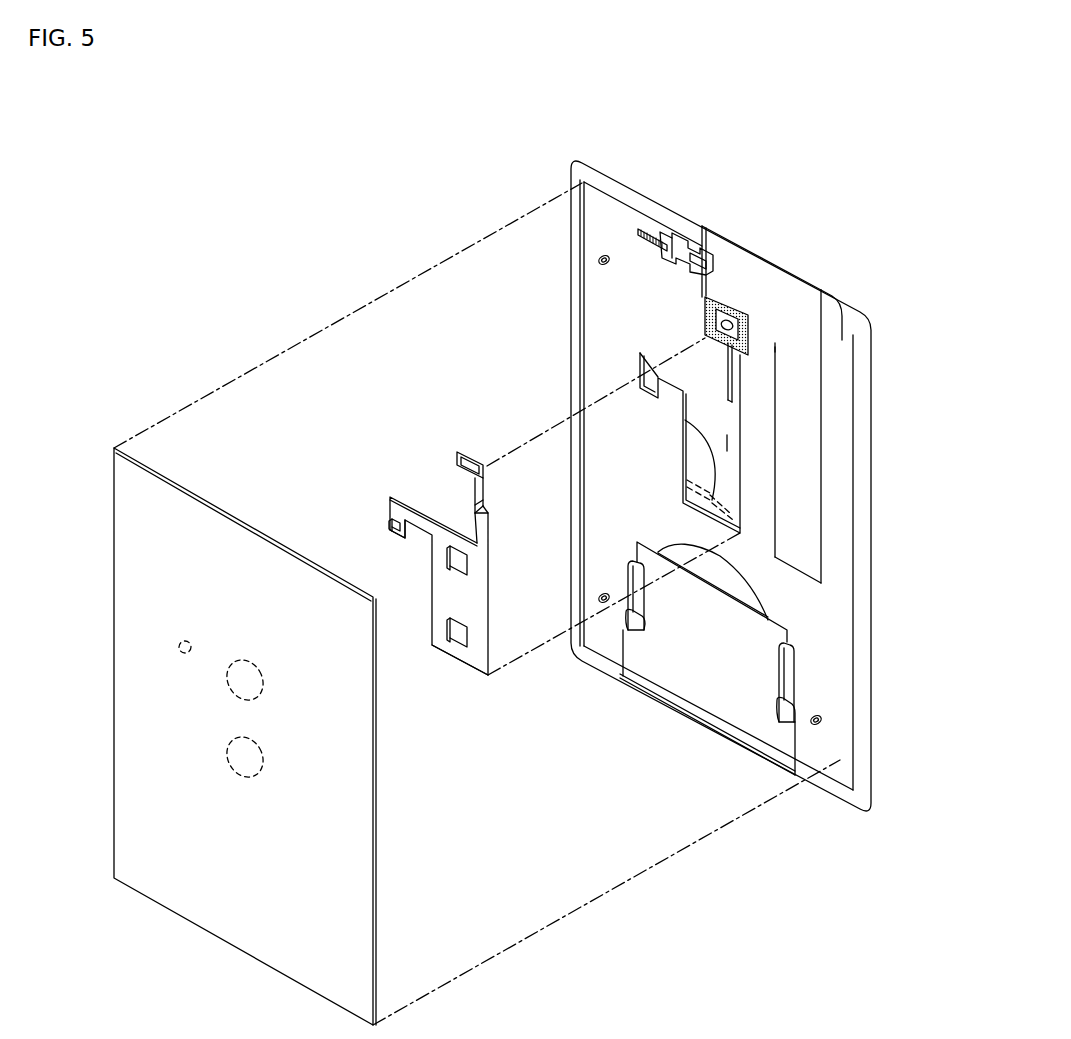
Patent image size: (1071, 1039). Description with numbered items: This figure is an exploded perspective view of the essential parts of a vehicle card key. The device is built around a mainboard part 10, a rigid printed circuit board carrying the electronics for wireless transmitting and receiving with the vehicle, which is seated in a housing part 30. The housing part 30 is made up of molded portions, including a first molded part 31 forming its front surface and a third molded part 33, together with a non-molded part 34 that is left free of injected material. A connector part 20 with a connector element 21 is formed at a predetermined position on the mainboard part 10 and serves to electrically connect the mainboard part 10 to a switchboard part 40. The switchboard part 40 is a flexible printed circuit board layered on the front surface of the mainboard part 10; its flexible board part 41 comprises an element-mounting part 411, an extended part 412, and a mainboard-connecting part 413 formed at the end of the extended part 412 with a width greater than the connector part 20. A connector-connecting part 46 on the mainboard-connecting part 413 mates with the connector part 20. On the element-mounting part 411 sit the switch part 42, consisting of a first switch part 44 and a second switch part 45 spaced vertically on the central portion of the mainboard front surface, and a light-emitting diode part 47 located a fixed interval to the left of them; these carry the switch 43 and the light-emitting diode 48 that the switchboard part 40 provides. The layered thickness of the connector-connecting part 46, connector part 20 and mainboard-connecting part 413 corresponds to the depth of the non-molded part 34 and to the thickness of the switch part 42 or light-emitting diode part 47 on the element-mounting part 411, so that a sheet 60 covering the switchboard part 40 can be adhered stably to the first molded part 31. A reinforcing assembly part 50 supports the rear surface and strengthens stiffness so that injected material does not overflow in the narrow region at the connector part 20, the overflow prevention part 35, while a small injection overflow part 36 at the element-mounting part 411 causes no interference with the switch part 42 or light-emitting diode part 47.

The mainboard part 10 is at (727, 473).
The connector part 20 is at (760, 318).
The connector element 21 is at (727, 317).
The housing part 30 is at (655, 172).
The first molded part 31 is at (617, 308).
The third molded part 33 is at (866, 634).
The non-molded part 34 is at (727, 443).
The overflow prevention part 35 is at (776, 347).
The injection overflow part 36 is at (730, 513).
The switchboard part 40 is at (388, 460).
The flexible board part 41 is at (547, 365).
The element-mounting part 411 is at (487, 466).
The extended part 412 is at (481, 507).
The mainboard-connecting part 413 is at (465, 462).
The switch part 42 is at (397, 730).
The switch 43 is at (462, 636).
The first switch part 44 is at (440, 590).
The second switch part 45 is at (458, 660).
The connector-connecting part 46 is at (458, 467).
The light-emitting diode part 47 is at (380, 538).
The light-emitting diode 48 is at (393, 525).
The reinforcing assembly part 50 is at (757, 293).
The sheet 60 is at (193, 517).